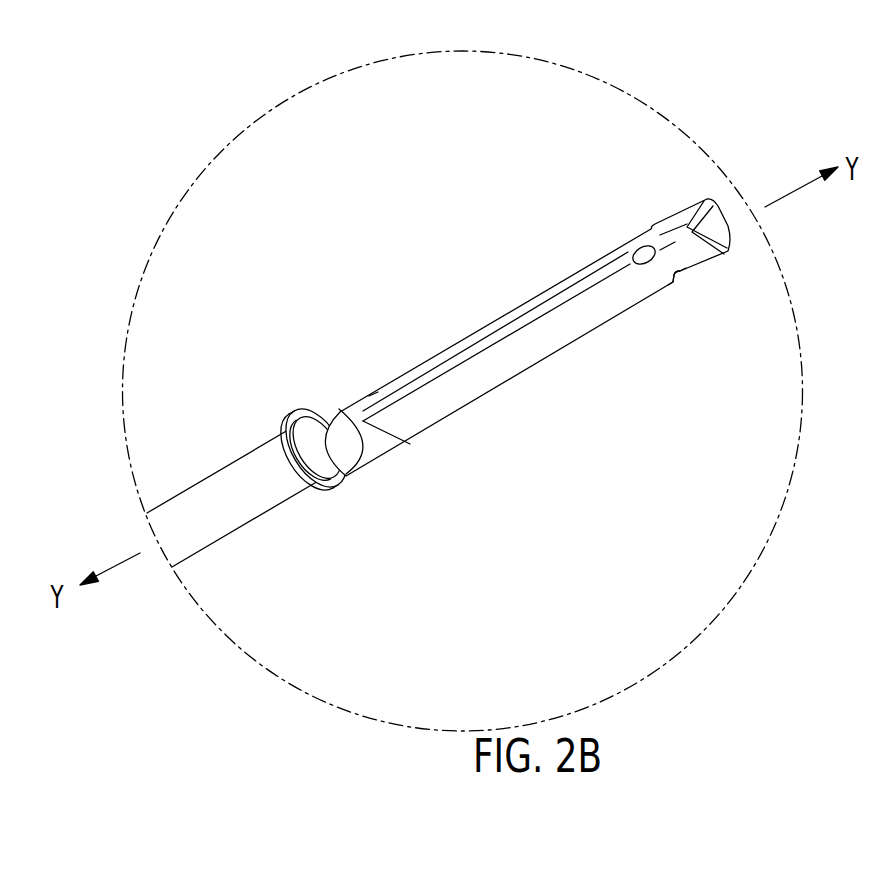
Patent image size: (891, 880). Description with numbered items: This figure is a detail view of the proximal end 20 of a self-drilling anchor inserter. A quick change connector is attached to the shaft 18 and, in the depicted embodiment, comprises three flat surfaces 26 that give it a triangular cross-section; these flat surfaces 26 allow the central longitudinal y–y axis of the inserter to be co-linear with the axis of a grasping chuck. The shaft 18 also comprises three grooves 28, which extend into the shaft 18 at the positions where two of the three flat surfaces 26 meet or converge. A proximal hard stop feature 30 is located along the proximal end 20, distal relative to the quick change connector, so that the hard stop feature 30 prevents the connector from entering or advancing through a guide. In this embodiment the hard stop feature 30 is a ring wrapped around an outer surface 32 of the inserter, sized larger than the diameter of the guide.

The shaft 18 is at (227, 540).
The proximal end 20 is at (637, 468).
The flat surfaces 26 is at (590, 256).
The grooves 28 is at (685, 283).
The hard stop feature 30 is at (294, 405).
The outer surface 32 is at (276, 490).